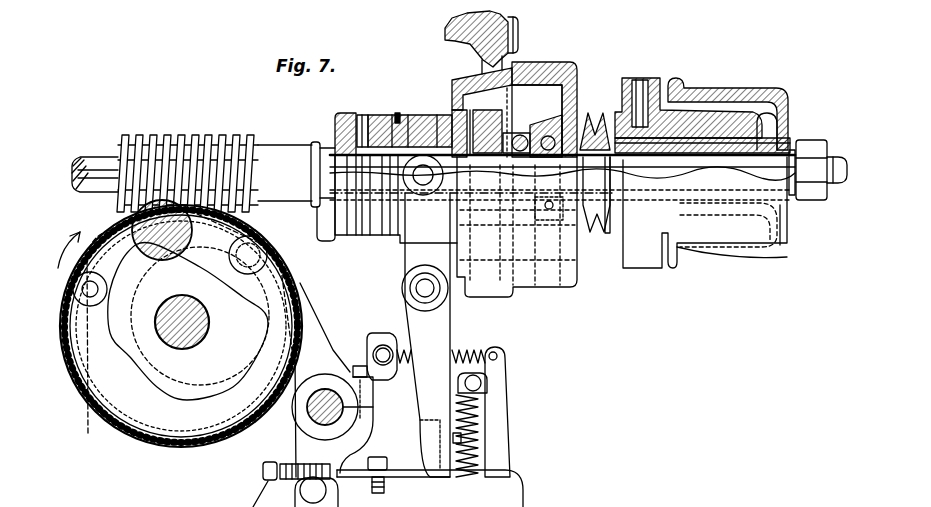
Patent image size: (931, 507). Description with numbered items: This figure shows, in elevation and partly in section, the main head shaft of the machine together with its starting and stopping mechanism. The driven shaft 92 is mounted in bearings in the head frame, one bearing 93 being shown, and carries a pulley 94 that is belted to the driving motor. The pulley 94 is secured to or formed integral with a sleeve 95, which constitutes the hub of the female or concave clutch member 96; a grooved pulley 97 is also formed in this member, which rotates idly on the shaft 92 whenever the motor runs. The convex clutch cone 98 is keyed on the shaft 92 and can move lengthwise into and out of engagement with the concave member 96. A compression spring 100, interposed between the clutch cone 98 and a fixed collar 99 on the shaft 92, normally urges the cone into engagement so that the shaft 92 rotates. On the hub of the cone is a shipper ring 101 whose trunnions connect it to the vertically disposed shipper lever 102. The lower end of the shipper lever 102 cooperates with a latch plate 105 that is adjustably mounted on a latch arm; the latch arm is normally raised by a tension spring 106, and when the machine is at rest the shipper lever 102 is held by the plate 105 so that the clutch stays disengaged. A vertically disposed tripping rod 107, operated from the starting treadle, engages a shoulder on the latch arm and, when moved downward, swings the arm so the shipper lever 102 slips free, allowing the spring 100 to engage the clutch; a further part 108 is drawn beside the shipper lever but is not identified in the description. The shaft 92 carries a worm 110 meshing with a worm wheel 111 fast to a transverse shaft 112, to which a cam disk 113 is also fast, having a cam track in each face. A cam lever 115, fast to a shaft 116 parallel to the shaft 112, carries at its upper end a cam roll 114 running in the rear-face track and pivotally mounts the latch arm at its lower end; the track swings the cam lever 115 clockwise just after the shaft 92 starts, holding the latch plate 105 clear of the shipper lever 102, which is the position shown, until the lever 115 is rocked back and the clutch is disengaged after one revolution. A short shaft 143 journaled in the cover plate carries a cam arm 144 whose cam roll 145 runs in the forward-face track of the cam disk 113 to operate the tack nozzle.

The driven shaft 92 is at (90, 165).
The bearing 93 is at (642, 255).
The pulley 94 is at (710, 88).
The sleeve 95 is at (755, 135).
The concave clutch member 96 is at (548, 68).
The grooved pulley 97 is at (592, 125).
The clutch cone 98 is at (470, 82).
The fixed collar 99 is at (336, 120).
The compression spring 100 is at (362, 115).
The shipper ring 101 is at (425, 118).
The shipper lever 102 is at (447, 320).
The latch plate 105 is at (396, 470).
The tension spring 106 is at (470, 437).
The tripping rod 107 is at (500, 465).
The spring 108 is at (476, 350).
The worm 110 is at (138, 142).
The worm wheel 111 is at (88, 433).
The transverse shaft 112 is at (178, 338).
The cam disk 113 is at (150, 418).
The cam roll 114 is at (285, 262).
The cam lever 115 is at (318, 328).
The shaft 116 is at (315, 425).
The short shaft 143 is at (170, 228).
The cam arm 144 is at (125, 245).
The cam roll 145 is at (96, 297).